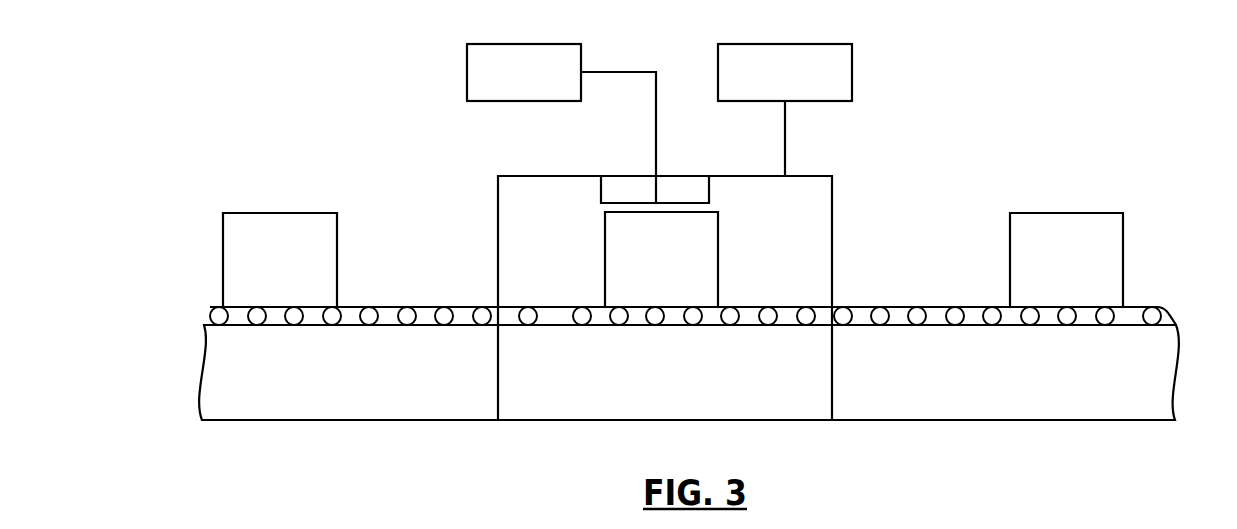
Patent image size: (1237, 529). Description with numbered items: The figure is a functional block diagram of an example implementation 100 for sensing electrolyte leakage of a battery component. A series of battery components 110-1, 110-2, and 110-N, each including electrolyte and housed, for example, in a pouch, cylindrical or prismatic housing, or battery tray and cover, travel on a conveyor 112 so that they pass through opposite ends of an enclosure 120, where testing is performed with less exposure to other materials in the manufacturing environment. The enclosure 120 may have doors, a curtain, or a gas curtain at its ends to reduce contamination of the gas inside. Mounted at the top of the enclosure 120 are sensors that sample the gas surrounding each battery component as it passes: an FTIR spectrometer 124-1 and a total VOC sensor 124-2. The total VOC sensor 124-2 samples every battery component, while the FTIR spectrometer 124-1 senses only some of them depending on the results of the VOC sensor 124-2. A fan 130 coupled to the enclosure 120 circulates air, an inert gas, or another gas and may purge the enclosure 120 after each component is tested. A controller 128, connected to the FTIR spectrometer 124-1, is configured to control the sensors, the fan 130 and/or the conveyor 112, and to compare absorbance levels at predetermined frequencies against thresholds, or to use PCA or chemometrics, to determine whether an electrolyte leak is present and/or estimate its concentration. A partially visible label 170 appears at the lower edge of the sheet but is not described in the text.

The system 100 is at (238, 142).
The battery component 110-1 is at (223, 258).
The battery component 110-2 is at (605, 276).
The battery component 110-N is at (1010, 262).
The conveyor 112 is at (424, 307).
The enclosure 120 is at (498, 204).
The FTIR spectrometer 124-1 is at (601, 187).
The total VOC sensor 124-2 is at (670, 176).
The controller 128 is at (467, 80).
The fan 130 is at (718, 62).
The element 170 is at (1230, 528).